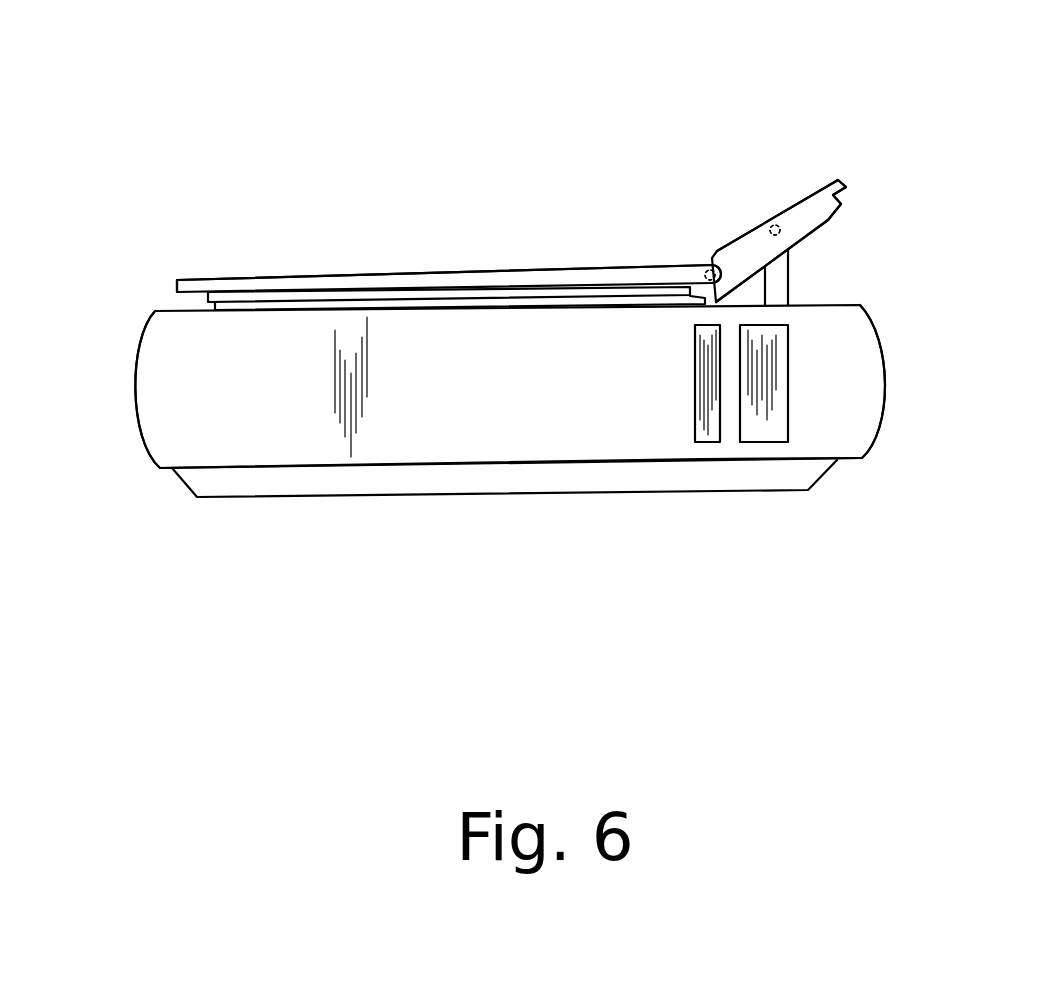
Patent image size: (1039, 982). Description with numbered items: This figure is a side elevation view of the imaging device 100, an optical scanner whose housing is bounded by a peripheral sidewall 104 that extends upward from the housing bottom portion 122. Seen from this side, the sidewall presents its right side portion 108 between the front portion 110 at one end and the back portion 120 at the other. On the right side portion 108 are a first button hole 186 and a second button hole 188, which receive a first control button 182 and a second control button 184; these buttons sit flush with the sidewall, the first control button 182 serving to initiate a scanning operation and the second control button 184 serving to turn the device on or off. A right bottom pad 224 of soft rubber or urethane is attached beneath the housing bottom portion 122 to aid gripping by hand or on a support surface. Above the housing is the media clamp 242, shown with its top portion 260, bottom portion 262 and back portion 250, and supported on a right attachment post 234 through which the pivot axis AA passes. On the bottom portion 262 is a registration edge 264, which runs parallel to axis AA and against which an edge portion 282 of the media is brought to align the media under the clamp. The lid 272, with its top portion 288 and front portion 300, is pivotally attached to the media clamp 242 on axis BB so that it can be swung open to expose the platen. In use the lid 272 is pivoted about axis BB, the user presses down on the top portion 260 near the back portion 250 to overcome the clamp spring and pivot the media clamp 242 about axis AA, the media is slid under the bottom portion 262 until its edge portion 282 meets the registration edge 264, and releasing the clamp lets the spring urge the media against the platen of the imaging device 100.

The imaging device 100 is at (893, 343).
The peripheral sidewall 104 is at (233, 428).
The right side portion 108 is at (410, 420).
The front portion 110 is at (133, 400).
The back portion 120 is at (887, 373).
The housing bottom portion 122 is at (853, 460).
The first control button 182 is at (780, 343).
The second control button 184 is at (703, 340).
The first button hole 186 is at (768, 442).
The second button hole 188 is at (705, 442).
The right bottom pad 224 is at (395, 478).
The right attachment post 234 is at (788, 262).
The media clamp 242 is at (793, 214).
The back portion 250 is at (843, 177).
The top portion 260 is at (805, 187).
The bottom portion 262 is at (827, 220).
The registration edge 264 is at (703, 300).
The lid 272 is at (430, 266).
The edge portion 282 is at (695, 300).
The top portion 288 is at (363, 275).
The front portion 300 is at (175, 287).
The axis AA is at (775, 228).
The axis BB is at (705, 262).